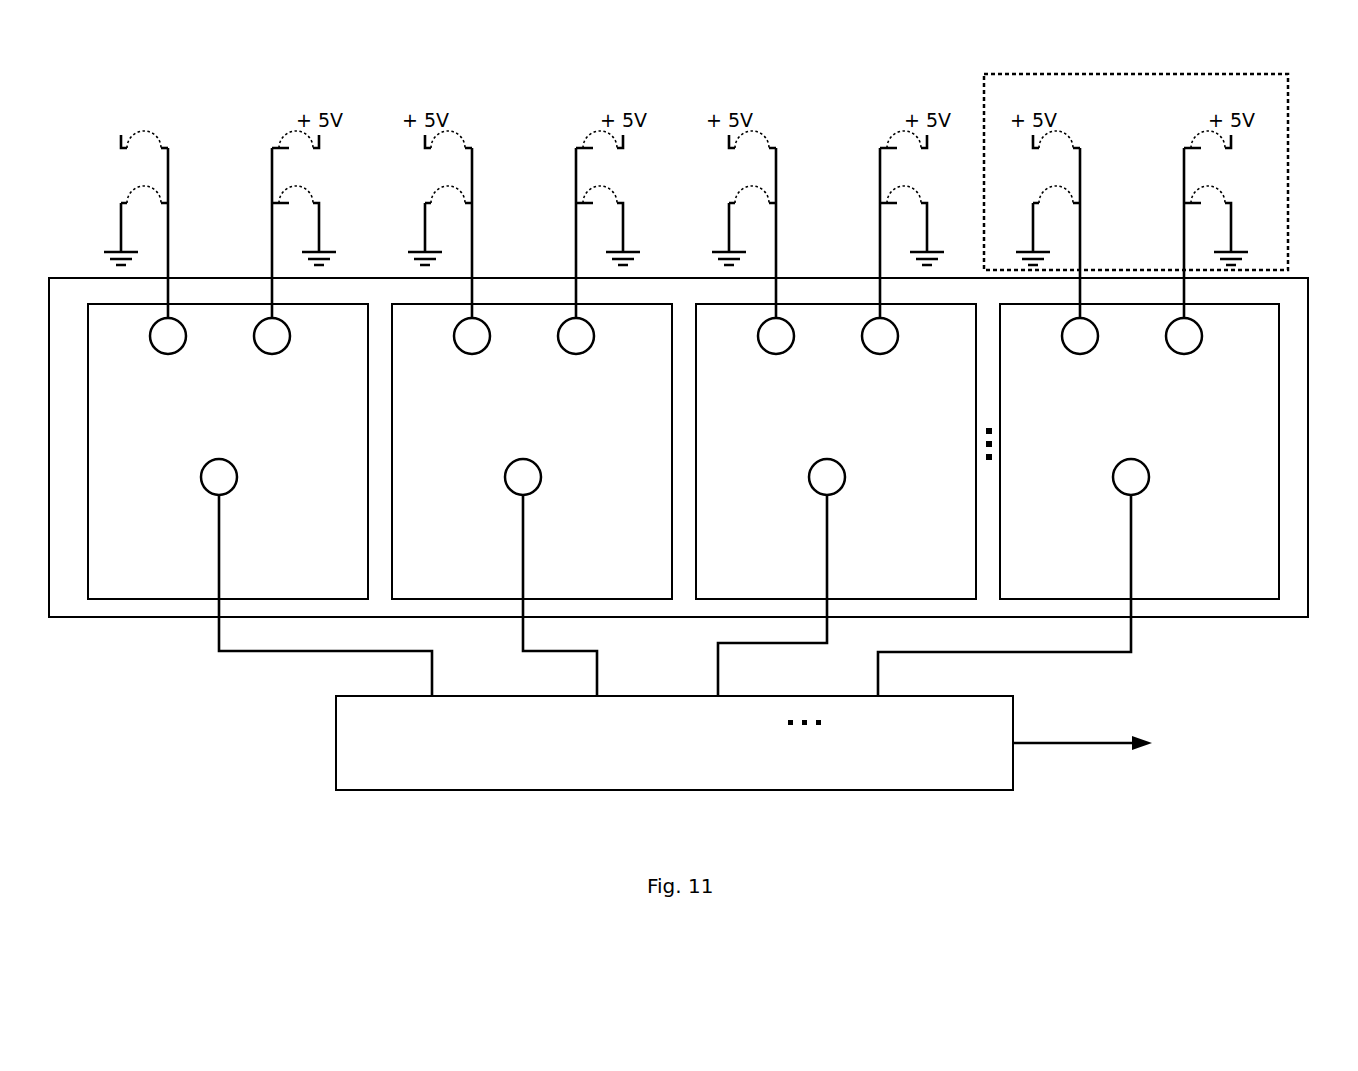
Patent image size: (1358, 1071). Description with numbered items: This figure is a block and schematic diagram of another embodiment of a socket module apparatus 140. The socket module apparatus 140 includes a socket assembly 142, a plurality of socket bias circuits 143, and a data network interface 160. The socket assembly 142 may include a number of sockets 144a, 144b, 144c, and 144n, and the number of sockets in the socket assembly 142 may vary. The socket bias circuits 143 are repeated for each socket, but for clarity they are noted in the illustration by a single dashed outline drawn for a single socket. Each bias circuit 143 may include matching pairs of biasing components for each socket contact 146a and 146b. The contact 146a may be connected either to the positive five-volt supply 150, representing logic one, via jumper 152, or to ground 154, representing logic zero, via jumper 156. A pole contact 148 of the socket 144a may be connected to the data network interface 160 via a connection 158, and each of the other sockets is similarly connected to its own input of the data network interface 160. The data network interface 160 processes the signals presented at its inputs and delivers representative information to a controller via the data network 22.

The socket module apparatus 140 is at (745, 53).
The socket assembly 142 is at (1212, 617).
The socket bias circuit 143 is at (1288, 108).
The socket 144a is at (368, 508).
The socket 144b is at (672, 508).
The socket 144c is at (976, 508).
The socket 144n is at (1279, 508).
The socket contact 146a is at (167, 355).
The socket contact 146b is at (272, 355).
The pole contact 148 is at (212, 462).
The +5 V 150 is at (128, 103).
The jumper 152 is at (158, 132).
The ground 154 is at (118, 252).
The jumper 156 is at (135, 188).
The connection 158 is at (308, 650).
The data network interface 160 is at (460, 792).
The data network 22 is at (1110, 745).